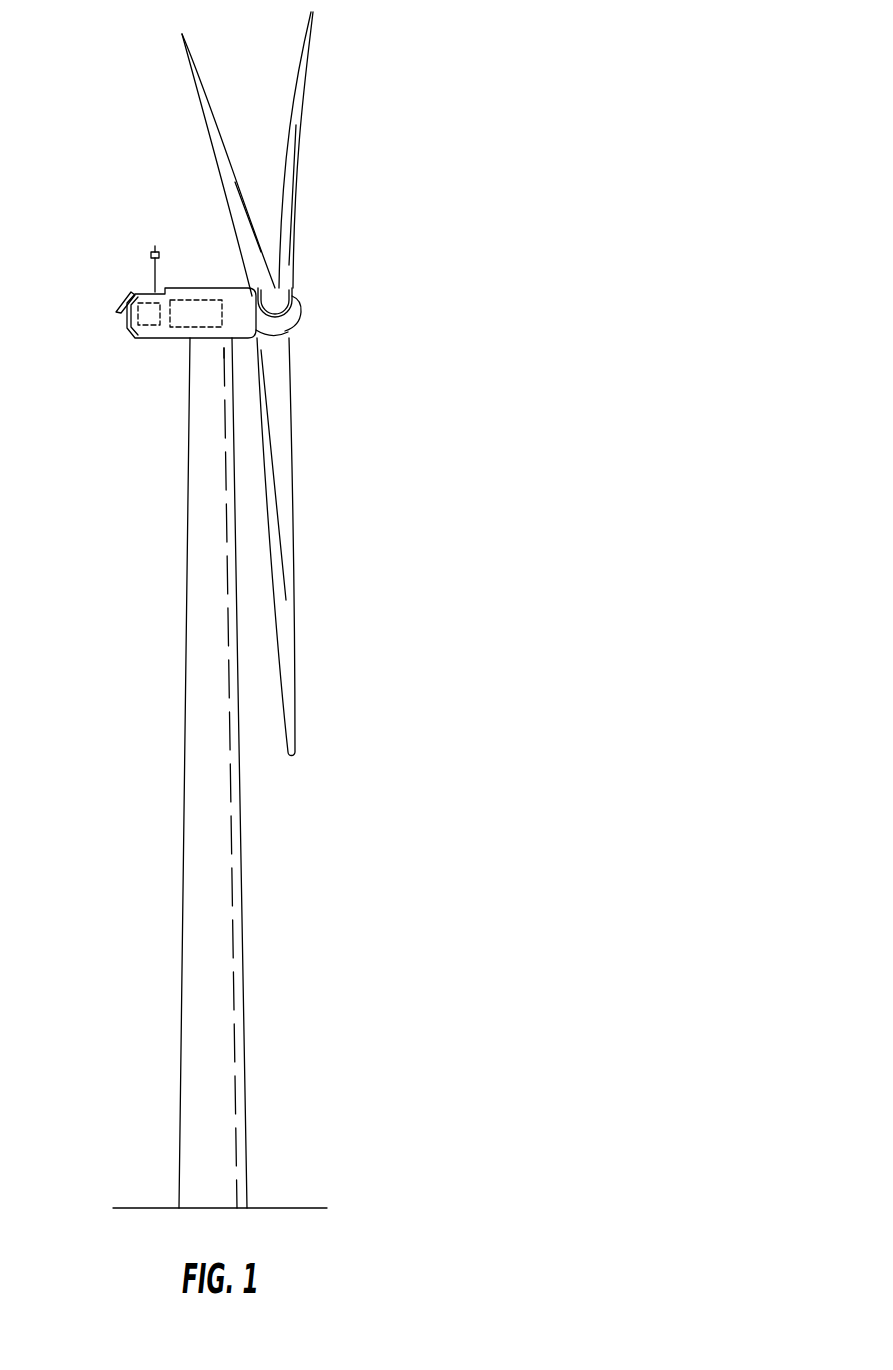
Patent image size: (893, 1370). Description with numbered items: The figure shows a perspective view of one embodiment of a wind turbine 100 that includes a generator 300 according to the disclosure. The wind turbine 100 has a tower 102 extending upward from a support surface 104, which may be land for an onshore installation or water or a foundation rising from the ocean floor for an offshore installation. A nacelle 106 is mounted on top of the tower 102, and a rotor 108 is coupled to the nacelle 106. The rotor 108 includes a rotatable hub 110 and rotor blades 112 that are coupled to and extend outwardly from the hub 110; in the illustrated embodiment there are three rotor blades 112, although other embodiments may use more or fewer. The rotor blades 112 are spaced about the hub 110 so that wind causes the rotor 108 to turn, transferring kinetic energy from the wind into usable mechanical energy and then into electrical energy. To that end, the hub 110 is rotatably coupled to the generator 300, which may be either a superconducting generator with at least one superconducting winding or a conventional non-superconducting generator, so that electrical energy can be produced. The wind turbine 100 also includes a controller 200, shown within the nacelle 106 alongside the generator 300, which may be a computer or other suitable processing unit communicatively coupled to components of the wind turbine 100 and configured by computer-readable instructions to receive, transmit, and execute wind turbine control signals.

The wind turbine 100 is at (452, 110).
The tower 102 is at (224, 847).
The support surface 104 is at (157, 1207).
The nacelle 106 is at (163, 345).
The rotor 108 is at (350, 266).
The rotatable hub 110 is at (300, 308).
The rotor blade 112 is at (290, 130).
The controller 200 is at (118, 303).
The generator 300 is at (206, 300).